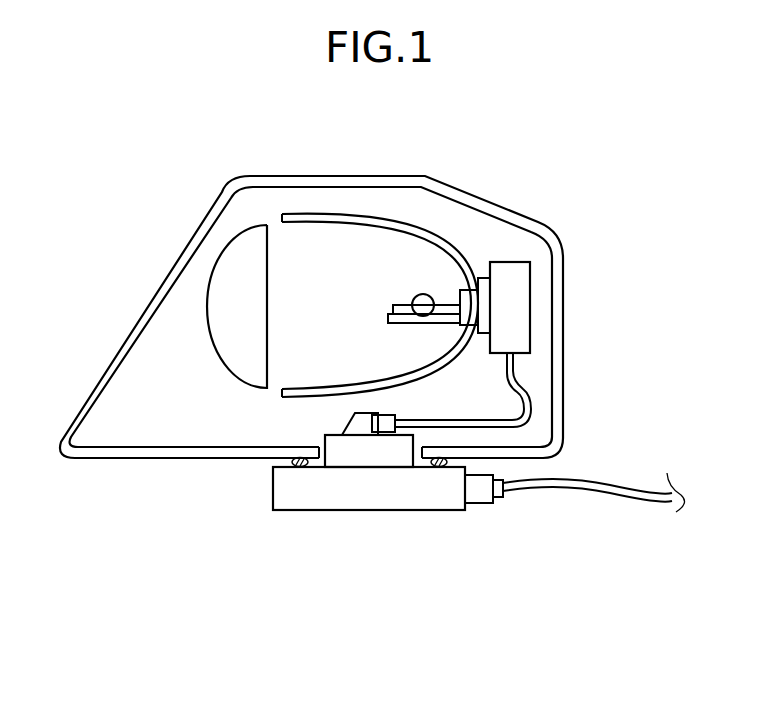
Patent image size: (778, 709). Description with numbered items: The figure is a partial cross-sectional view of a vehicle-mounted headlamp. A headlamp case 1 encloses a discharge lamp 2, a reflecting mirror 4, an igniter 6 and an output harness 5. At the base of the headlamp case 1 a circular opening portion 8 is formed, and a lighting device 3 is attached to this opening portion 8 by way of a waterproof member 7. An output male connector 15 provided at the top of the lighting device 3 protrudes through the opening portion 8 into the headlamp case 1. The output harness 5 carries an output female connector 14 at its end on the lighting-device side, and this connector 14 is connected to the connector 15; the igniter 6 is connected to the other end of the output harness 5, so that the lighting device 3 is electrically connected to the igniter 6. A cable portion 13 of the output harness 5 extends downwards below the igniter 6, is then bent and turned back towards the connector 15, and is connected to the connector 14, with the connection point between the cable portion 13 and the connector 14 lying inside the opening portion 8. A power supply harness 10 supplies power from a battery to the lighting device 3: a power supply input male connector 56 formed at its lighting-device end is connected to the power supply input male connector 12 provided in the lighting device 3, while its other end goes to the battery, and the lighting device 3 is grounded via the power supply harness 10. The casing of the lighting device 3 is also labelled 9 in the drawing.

The headlamp case 1 is at (563, 395).
The discharge lamp 2 is at (405, 304).
The lighting device 3 is at (336, 505).
The reflecting mirror 4 is at (417, 222).
The output harness 5 is at (470, 288).
The igniter 6 is at (518, 262).
The waterproof member 7 is at (298, 468).
The opening portion 8 is at (324, 446).
The unit casing 9 is at (273, 488).
The power supply harness 10 is at (643, 503).
The power supply input male connector 12 is at (478, 503).
The cable portion 13 is at (516, 372).
The output female connector 14 is at (387, 416).
The output male connector 15 is at (348, 421).
The power supply input male connector 56 is at (505, 493).